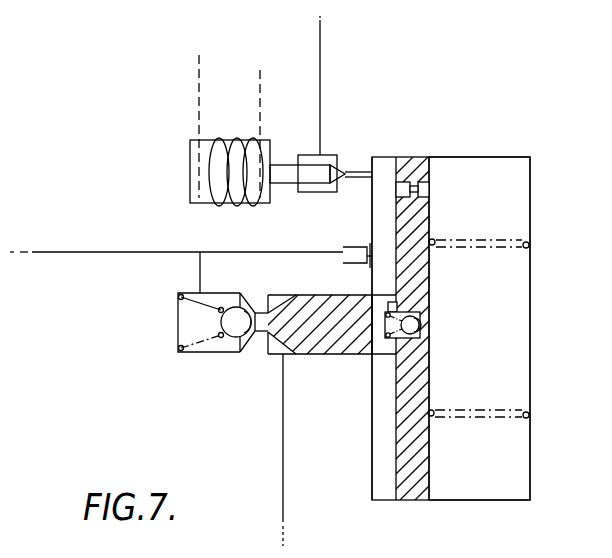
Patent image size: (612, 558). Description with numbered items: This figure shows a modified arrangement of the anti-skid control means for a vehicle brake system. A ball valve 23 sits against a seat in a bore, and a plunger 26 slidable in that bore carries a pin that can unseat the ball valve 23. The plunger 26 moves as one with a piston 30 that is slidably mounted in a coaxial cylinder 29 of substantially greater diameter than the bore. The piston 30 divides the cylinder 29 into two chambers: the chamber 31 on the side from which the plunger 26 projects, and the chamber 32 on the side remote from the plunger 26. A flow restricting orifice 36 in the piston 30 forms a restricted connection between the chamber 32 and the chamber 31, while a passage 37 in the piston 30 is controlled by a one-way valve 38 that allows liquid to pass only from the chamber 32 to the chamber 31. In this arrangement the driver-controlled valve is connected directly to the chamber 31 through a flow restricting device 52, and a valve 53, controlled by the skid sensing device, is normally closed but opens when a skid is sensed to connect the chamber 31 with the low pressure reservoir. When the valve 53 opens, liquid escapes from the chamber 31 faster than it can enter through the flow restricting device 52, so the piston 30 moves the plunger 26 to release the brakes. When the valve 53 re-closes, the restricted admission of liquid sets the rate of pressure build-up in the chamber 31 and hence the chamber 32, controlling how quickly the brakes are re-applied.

The ball valve 23 is at (233, 328).
The plunger 26 is at (336, 333).
The cylinder 29 is at (486, 502).
The piston 30 is at (413, 482).
The chamber 31 is at (380, 458).
The chamber 32 is at (500, 455).
The orifice 36 is at (414, 184).
The passage 37 is at (421, 309).
The one-way valve 38 is at (424, 334).
The flow restricting device 52 is at (371, 247).
The valve 53 is at (348, 155).